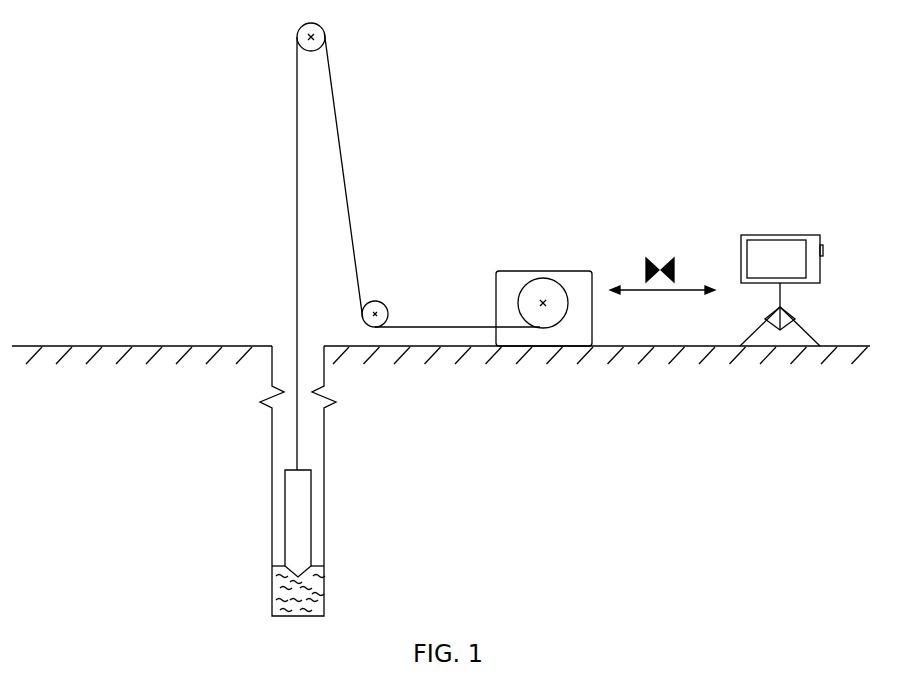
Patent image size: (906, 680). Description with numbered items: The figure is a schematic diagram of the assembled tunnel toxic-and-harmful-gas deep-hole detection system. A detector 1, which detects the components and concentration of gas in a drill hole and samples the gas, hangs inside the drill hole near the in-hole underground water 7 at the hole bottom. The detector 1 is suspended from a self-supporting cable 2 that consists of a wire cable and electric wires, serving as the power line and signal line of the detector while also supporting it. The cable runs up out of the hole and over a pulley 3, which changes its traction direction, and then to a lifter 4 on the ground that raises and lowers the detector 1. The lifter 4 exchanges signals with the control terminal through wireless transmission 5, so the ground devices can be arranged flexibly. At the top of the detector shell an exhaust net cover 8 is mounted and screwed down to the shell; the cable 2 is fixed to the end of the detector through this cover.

The detector 1 is at (302, 517).
The self-supporting cable 2 is at (303, 452).
The pulley 3 is at (383, 302).
The lifter 4 is at (522, 277).
The wireless transmission 5 is at (655, 257).
The in-hole underground water 7 is at (307, 598).
The exhaust net cover 8 is at (782, 233).